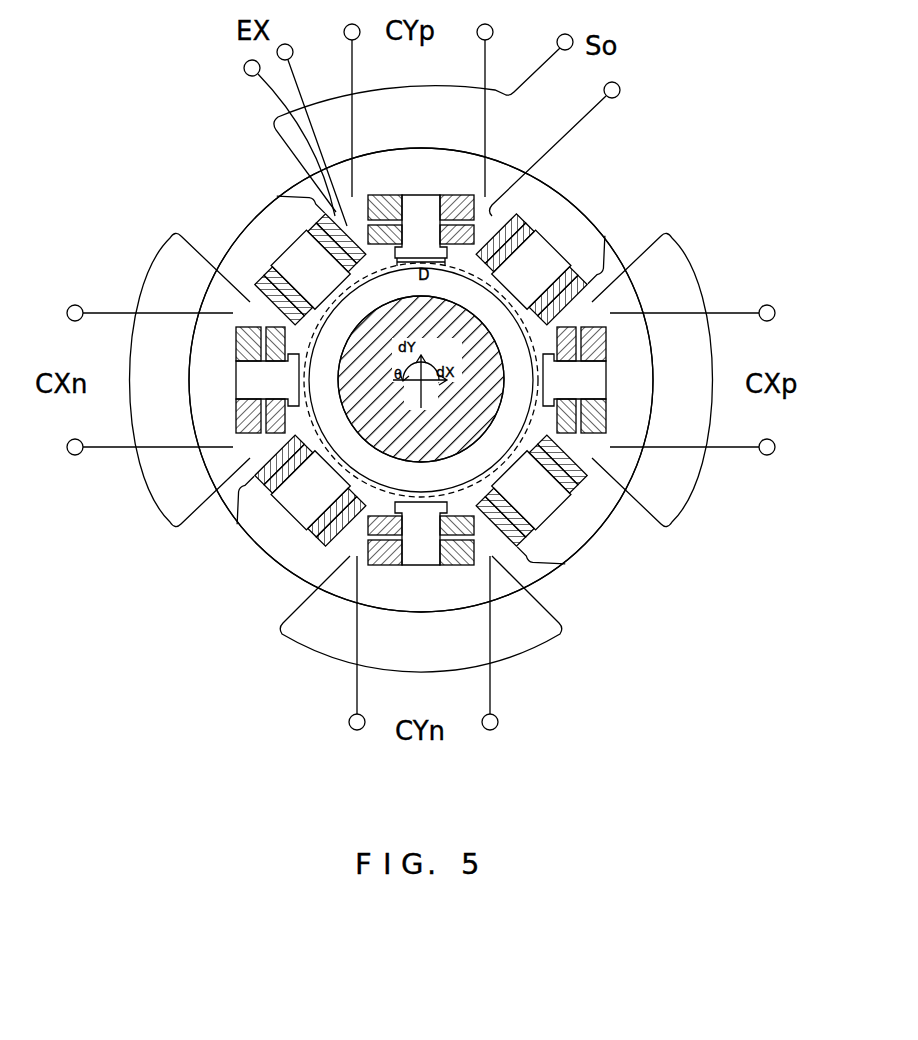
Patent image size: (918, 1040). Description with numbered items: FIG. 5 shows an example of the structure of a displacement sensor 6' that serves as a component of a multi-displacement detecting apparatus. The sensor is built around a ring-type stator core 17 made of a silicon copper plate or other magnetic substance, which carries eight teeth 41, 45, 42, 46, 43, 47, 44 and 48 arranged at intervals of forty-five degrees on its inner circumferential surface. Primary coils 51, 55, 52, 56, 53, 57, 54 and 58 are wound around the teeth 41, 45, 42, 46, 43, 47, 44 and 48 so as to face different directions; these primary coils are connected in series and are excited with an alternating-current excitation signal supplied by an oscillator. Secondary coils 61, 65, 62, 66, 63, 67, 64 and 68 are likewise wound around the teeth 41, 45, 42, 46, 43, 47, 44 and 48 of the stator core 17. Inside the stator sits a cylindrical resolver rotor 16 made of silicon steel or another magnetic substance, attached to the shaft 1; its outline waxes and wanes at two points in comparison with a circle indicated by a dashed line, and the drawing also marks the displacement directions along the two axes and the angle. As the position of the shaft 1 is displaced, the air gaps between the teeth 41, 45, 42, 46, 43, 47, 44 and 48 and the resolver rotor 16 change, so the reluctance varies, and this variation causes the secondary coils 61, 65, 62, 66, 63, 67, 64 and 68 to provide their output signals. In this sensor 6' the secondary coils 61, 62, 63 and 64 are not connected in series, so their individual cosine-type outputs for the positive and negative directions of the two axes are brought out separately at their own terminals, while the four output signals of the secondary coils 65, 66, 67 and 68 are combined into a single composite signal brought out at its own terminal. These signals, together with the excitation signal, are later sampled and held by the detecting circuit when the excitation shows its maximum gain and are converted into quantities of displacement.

The shaft 1 is at (393, 418).
The displacement sensor 6' is at (448, 358).
The resolver rotor 16 is at (527, 380).
The stator core 17 is at (622, 378).
The tooth 41 is at (567, 376).
The tooth 42 is at (421, 233).
The tooth 43 is at (272, 389).
The tooth 44 is at (427, 532).
The tooth 45 is at (531, 269).
The tooth 46 is at (310, 274).
The tooth 47 is at (310, 490).
The tooth 48 is at (531, 488).
The primary coil 51 is at (565, 416).
The primary coil 52 is at (457, 234).
The primary coil 53 is at (273, 344).
The primary coil 54 is at (385, 530).
The primary coil 55 is at (563, 343).
The primary coil 56 is at (385, 238).
The primary coil 57 is at (278, 424).
The primary coil 58 is at (462, 525).
The secondary coil 61 is at (612, 412).
The secondary coil 62 is at (445, 192).
The secondary coil 63 is at (240, 346).
The secondary coil 64 is at (376, 558).
The secondary coil 65 is at (571, 272).
The secondary coil 66 is at (282, 200).
The secondary coil 67 is at (265, 477).
The secondary coil 68 is at (532, 528).